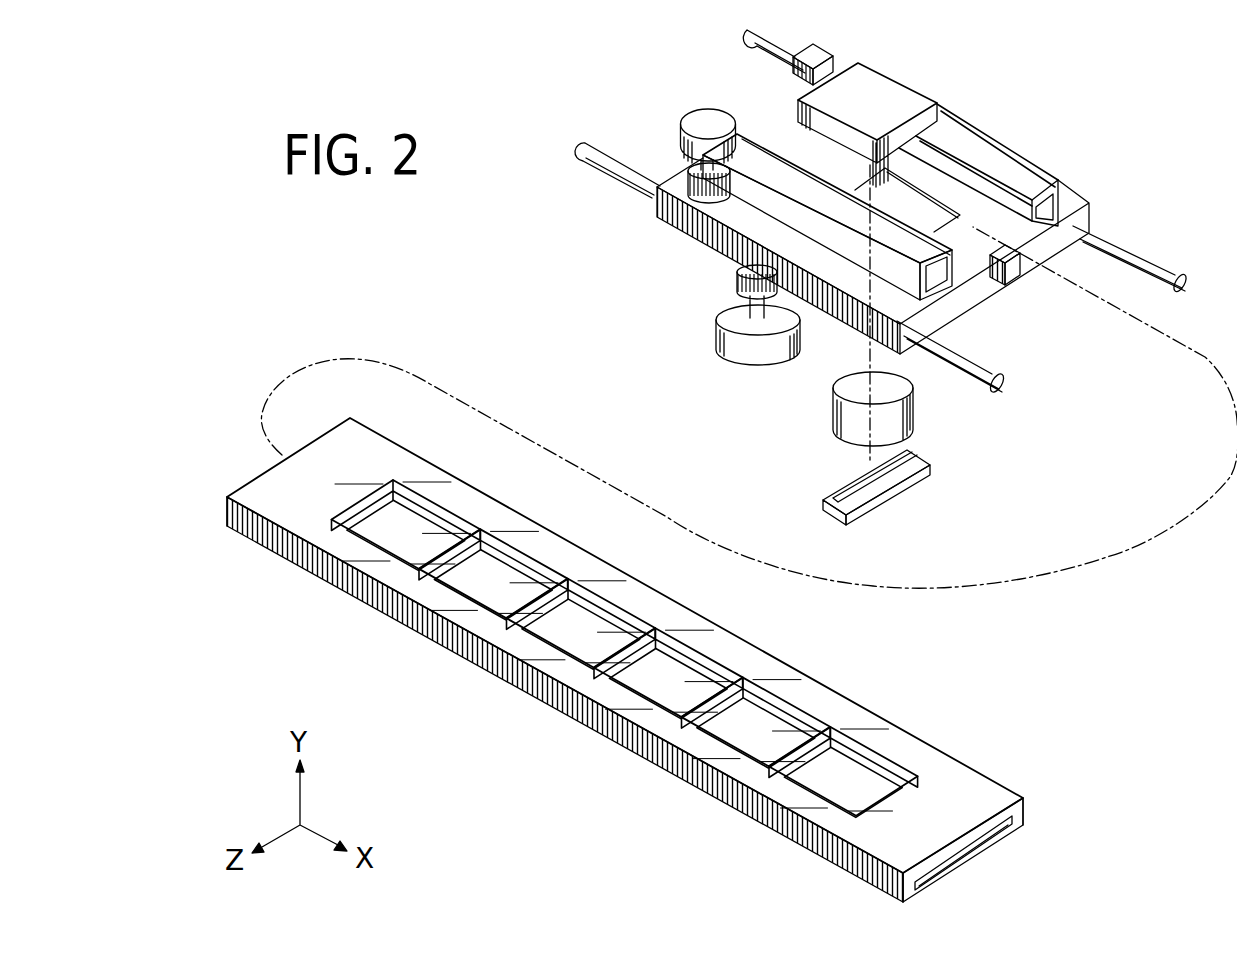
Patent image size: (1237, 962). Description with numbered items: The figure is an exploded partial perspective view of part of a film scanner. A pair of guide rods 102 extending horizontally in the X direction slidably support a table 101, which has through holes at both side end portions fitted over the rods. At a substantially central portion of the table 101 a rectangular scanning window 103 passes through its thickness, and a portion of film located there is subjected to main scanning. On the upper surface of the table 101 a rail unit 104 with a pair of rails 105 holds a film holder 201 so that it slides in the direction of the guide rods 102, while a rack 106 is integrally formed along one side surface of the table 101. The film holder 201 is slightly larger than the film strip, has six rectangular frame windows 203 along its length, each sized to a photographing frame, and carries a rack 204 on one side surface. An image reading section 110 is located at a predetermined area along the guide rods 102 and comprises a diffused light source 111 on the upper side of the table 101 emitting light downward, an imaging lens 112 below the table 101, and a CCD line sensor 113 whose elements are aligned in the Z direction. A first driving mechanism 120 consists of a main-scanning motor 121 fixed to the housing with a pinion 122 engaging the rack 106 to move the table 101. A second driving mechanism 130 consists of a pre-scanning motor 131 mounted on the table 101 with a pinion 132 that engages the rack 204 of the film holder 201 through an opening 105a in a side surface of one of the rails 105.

The table 101 is at (1125, 176).
The guide rods 102 is at (1195, 226).
The scanning window 103 is at (924, 206).
The rail unit 104 is at (1005, 275).
The rails 105 is at (1028, 170).
The opening 105a is at (735, 180).
The rack 106 is at (665, 218).
The image reading section 110 is at (908, 277).
The diffused light source 111 is at (892, 93).
The imaging lens 112 is at (855, 432).
The CCD line sensor 113 is at (897, 478).
The first driving mechanism 120 is at (717, 341).
The main-scanning motor 121 is at (745, 355).
The pinion 122 is at (738, 288).
The second driving mechanism 130 is at (687, 118).
The pre-scanning motor 131 is at (724, 116).
The pinion 132 is at (685, 183).
The film holder 201 is at (862, 715).
The frame windows 203 is at (668, 677).
The rack 204 is at (524, 683).